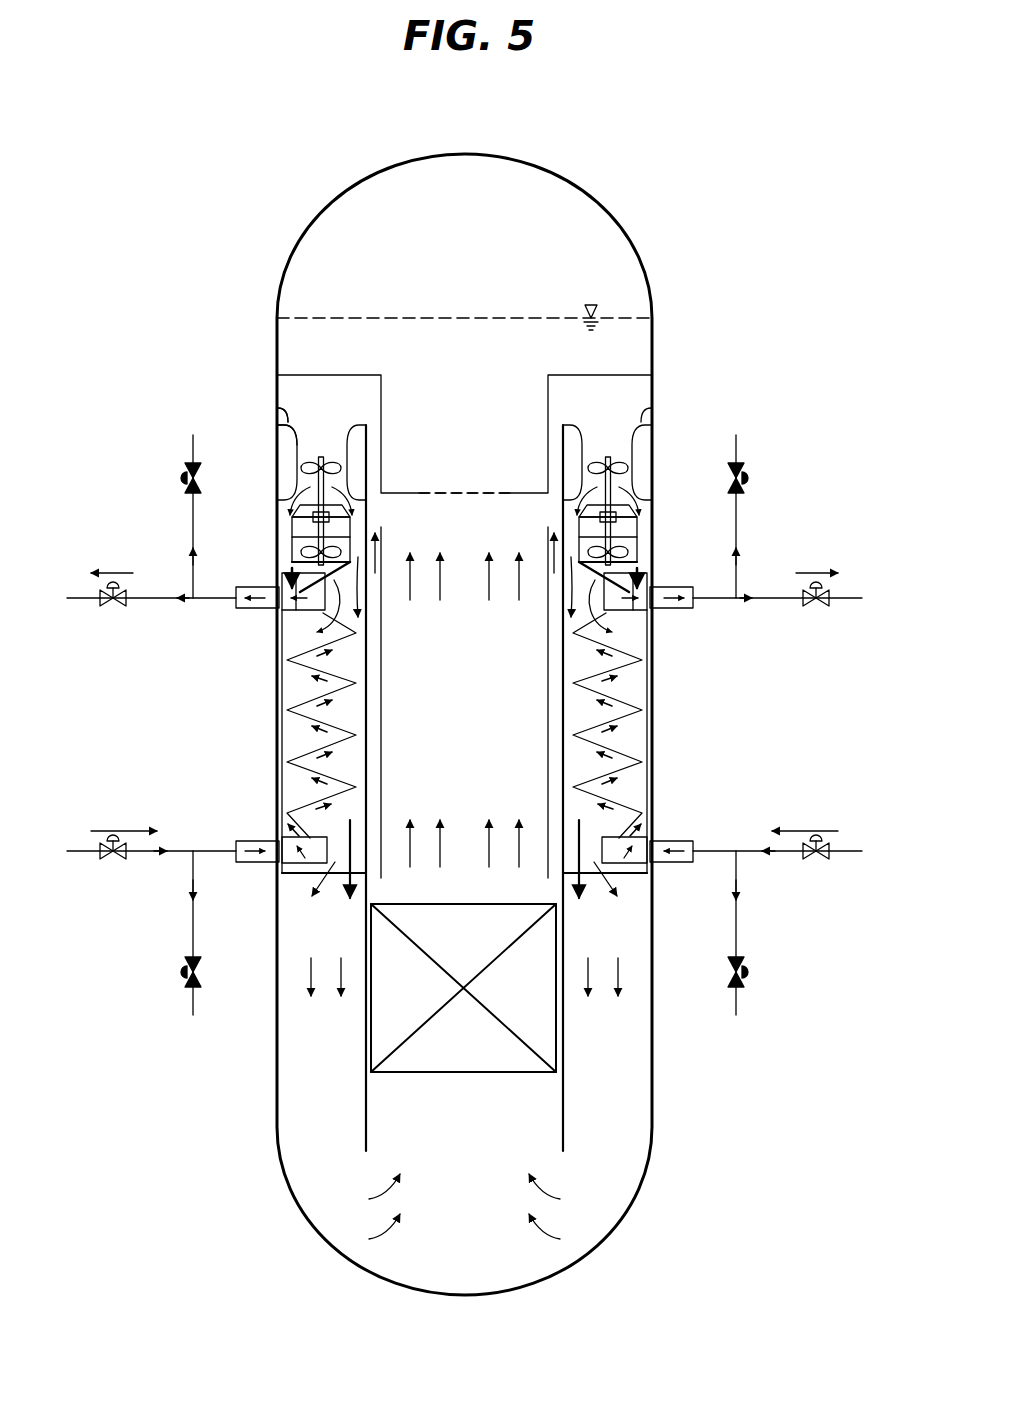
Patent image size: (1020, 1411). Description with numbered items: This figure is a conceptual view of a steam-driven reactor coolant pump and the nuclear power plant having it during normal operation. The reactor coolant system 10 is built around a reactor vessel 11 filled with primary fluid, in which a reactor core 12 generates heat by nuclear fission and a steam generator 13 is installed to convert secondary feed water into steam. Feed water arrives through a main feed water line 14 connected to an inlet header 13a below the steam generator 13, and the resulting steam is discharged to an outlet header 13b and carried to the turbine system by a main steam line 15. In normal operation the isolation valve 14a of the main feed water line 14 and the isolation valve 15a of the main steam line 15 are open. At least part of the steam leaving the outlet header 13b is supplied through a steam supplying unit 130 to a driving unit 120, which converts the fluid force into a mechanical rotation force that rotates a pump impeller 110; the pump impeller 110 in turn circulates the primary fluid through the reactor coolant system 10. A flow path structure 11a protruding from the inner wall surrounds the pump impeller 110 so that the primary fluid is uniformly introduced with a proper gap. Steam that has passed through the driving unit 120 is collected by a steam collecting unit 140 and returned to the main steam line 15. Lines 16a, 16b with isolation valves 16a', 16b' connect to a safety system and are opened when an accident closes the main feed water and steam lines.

The reactor coolant system 10 is at (474, 707).
The reactor vessel 11 is at (306, 235).
The flow path structure 11a is at (281, 410).
The reactor core 12 is at (393, 1072).
The steam generator 13 is at (655, 742).
The inlet header 13a is at (683, 863).
The outlet header 13b is at (680, 610).
The main feed water line 14 is at (80, 853).
The isolation valve 14a is at (120, 862).
The main steam line 15 is at (80, 600).
The isolation valve 15a is at (120, 609).
The line 16a is at (775, 933).
The isolation valve 16a' is at (775, 975).
The line 16b is at (775, 516).
The isolation valve 16b' is at (775, 471).
The pump impeller 110 is at (626, 468).
The driving unit 120 is at (626, 552).
The steam supplying unit 130 is at (612, 629).
The steam collecting unit 140 is at (645, 575).